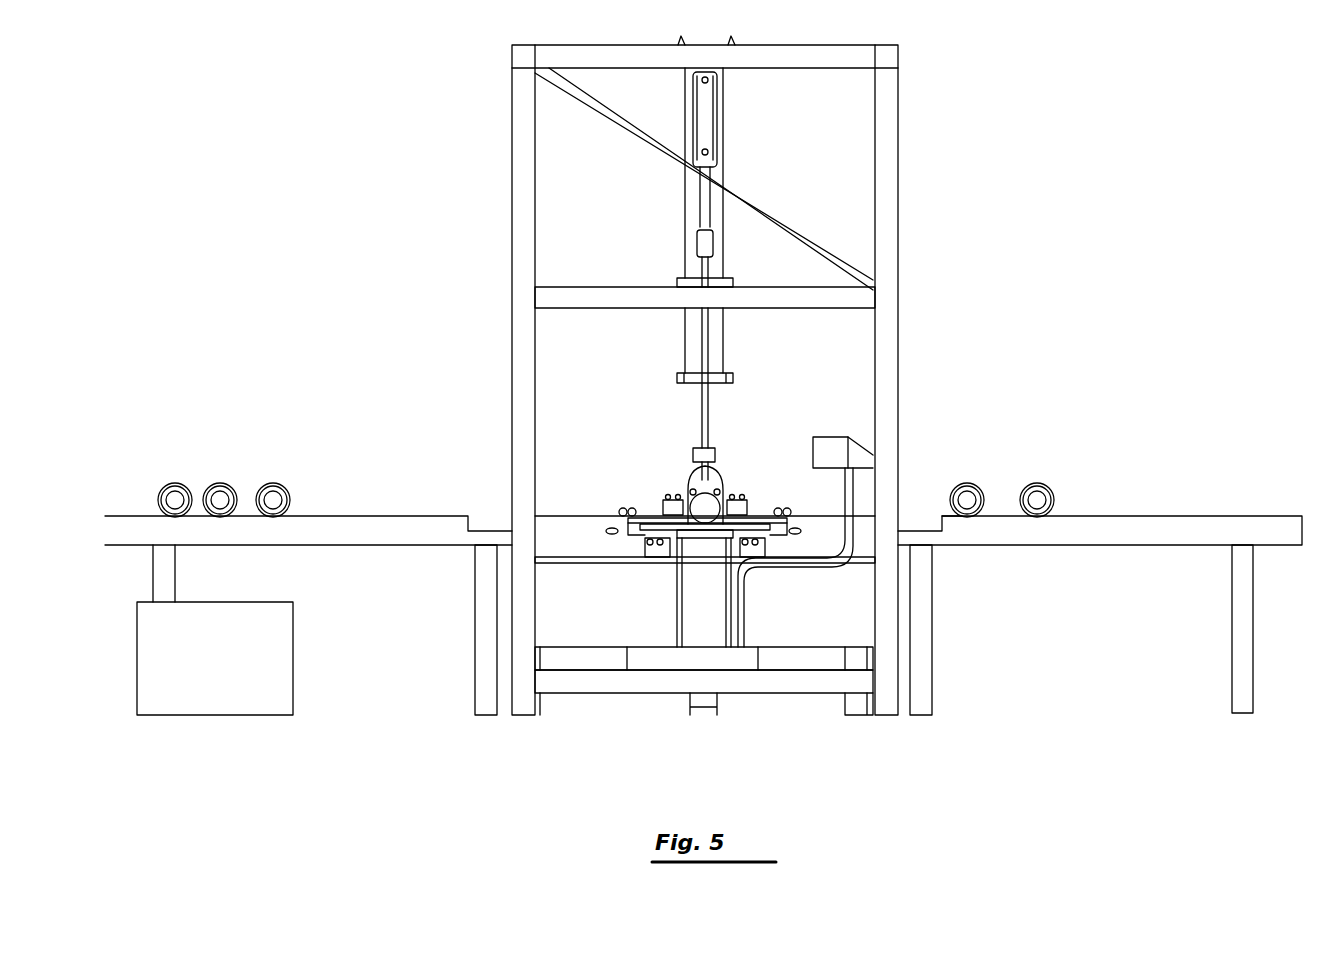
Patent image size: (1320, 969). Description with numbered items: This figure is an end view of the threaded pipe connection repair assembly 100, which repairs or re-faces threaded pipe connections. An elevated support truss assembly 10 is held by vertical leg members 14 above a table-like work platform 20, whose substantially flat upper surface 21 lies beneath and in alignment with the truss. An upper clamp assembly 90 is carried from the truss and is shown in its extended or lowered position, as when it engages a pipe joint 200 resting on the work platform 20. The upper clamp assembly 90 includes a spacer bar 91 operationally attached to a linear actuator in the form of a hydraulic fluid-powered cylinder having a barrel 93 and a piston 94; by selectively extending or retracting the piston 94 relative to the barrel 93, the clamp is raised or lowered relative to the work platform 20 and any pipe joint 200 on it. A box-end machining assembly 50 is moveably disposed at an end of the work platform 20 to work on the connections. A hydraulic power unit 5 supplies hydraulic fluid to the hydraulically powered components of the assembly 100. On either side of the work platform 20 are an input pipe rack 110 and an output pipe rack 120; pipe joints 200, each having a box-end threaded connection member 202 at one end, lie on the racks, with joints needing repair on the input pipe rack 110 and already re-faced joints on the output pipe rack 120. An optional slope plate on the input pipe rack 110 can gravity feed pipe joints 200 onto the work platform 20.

The threaded pipe connection repair assembly 100 is at (1032, 178).
The elevated support truss assembly 10 is at (505, 113).
The vertical leg members 14 is at (524, 210).
The barrel 93 is at (722, 112).
The piston 94 is at (700, 205).
The spacer bar 91 is at (708, 405).
The upper clamp assembly 90 is at (693, 475).
The box-end machining assembly 50 is at (663, 604).
The work platform 20 is at (570, 530).
The upper surface 21 is at (545, 530).
The output pipe rack 120 is at (402, 535).
The hydraulic power unit 5 is at (163, 654).
The input pipe rack 110 is at (1167, 530).
The box-end threaded connection member 202 is at (953, 517).
The pipe joint 200 is at (1075, 425).